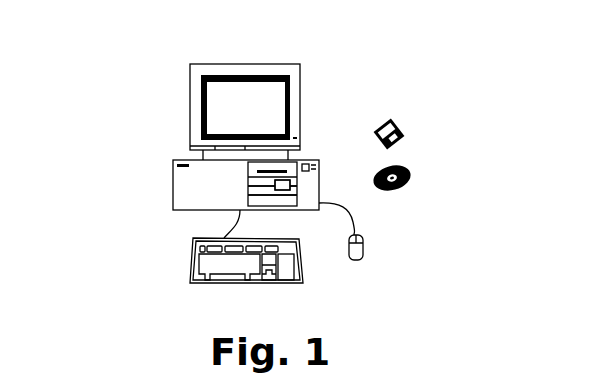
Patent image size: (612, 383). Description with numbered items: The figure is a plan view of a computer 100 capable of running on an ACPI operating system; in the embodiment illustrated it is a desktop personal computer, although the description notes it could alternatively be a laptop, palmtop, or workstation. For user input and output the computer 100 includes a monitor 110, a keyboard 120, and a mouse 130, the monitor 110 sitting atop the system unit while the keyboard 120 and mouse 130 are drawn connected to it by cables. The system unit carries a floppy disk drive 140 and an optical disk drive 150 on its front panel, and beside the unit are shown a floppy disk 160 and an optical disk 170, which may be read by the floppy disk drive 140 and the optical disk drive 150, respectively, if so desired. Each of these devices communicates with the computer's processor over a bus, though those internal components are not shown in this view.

The computer 100 is at (151, 34).
The monitor 110 is at (292, 63).
The keyboard 120 is at (193, 263).
The mouse 130 is at (364, 240).
The floppy disk drive 140 is at (283, 171).
The optical disk drive 150 is at (268, 186).
The floppy disk 160 is at (406, 137).
The optical disk 170 is at (411, 183).